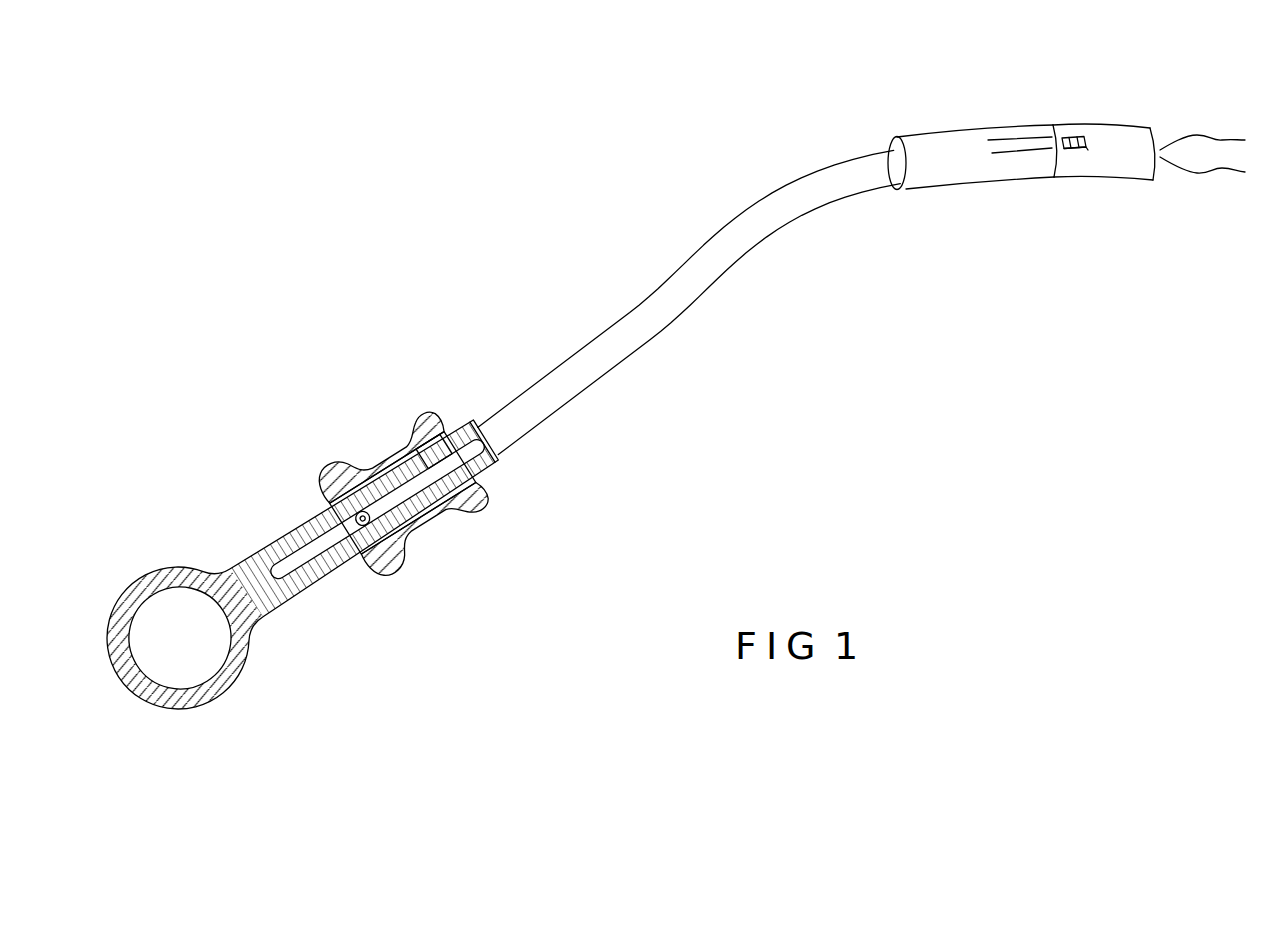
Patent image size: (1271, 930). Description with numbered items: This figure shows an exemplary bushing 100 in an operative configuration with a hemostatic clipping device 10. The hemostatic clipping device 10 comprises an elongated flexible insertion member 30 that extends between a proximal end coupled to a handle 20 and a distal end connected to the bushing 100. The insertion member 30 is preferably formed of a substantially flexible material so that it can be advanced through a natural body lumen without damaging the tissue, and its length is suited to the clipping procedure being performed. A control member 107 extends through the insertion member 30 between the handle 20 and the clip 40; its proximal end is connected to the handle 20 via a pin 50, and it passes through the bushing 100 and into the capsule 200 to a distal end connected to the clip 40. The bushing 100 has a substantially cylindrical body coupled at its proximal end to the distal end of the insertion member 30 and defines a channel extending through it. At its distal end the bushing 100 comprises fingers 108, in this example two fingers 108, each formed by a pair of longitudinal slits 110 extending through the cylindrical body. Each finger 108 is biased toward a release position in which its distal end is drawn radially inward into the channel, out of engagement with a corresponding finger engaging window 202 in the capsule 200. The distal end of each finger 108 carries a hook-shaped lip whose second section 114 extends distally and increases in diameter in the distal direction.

The hemostatic clipping device 10 is at (616, 475).
The handle 20 is at (240, 584).
The flexible insertion member 30 is at (785, 198).
The clip 40 is at (1215, 136).
The pin 50 is at (336, 522).
The control member 107 is at (431, 466).
The fingers 108 is at (1028, 147).
The longitudinal slits 110 is at (1008, 138).
The bushing 100 is at (942, 146).
The second section 114 is at (1071, 136).
The capsule 200 is at (1120, 134).
The finger engaging window 202 is at (1080, 150).